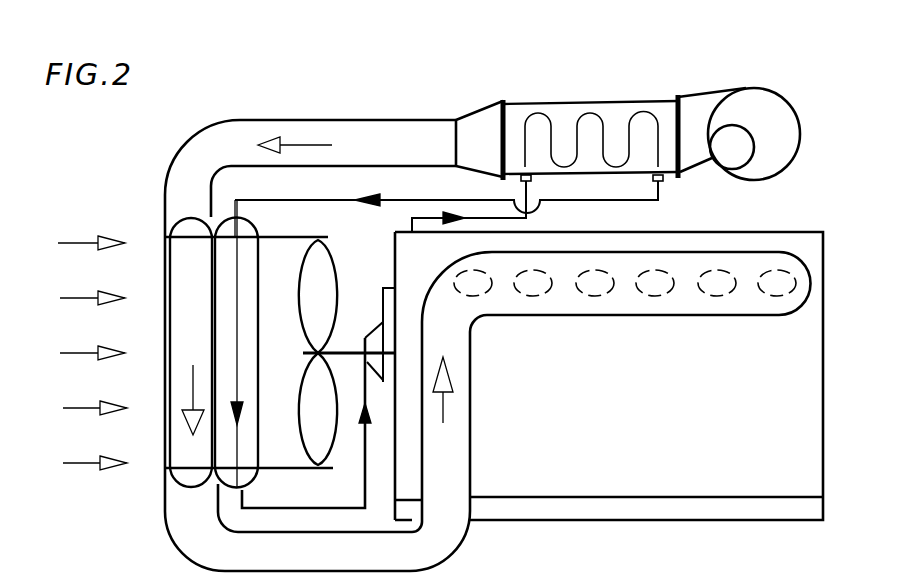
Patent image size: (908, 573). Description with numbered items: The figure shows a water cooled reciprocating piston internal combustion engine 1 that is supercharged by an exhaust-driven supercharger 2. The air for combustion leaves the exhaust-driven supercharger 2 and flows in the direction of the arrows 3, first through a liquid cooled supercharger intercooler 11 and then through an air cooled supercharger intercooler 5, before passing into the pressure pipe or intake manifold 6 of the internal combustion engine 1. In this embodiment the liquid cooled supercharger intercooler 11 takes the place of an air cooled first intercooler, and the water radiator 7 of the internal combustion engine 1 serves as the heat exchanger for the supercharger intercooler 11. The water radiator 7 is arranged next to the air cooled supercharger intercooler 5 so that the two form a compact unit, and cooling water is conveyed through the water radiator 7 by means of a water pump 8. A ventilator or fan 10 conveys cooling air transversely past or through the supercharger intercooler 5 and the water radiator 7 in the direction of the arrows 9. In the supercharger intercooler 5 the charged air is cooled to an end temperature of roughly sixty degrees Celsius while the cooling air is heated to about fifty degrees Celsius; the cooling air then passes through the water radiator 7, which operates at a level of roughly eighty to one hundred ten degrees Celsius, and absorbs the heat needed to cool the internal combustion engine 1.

The internal combustion engine 1 is at (802, 400).
The exhaust-driven supercharger 2 is at (782, 118).
The arrows 3 is at (287, 137).
The supercharger intercooler 5 is at (249, 352).
The intake manifold 6 is at (762, 247).
The water radiator 7 is at (236, 344).
The water pump 8 is at (375, 373).
The arrows 9 is at (108, 235).
The fan 10 is at (320, 275).
The liquid cooled supercharger intercooler 11 is at (598, 110).